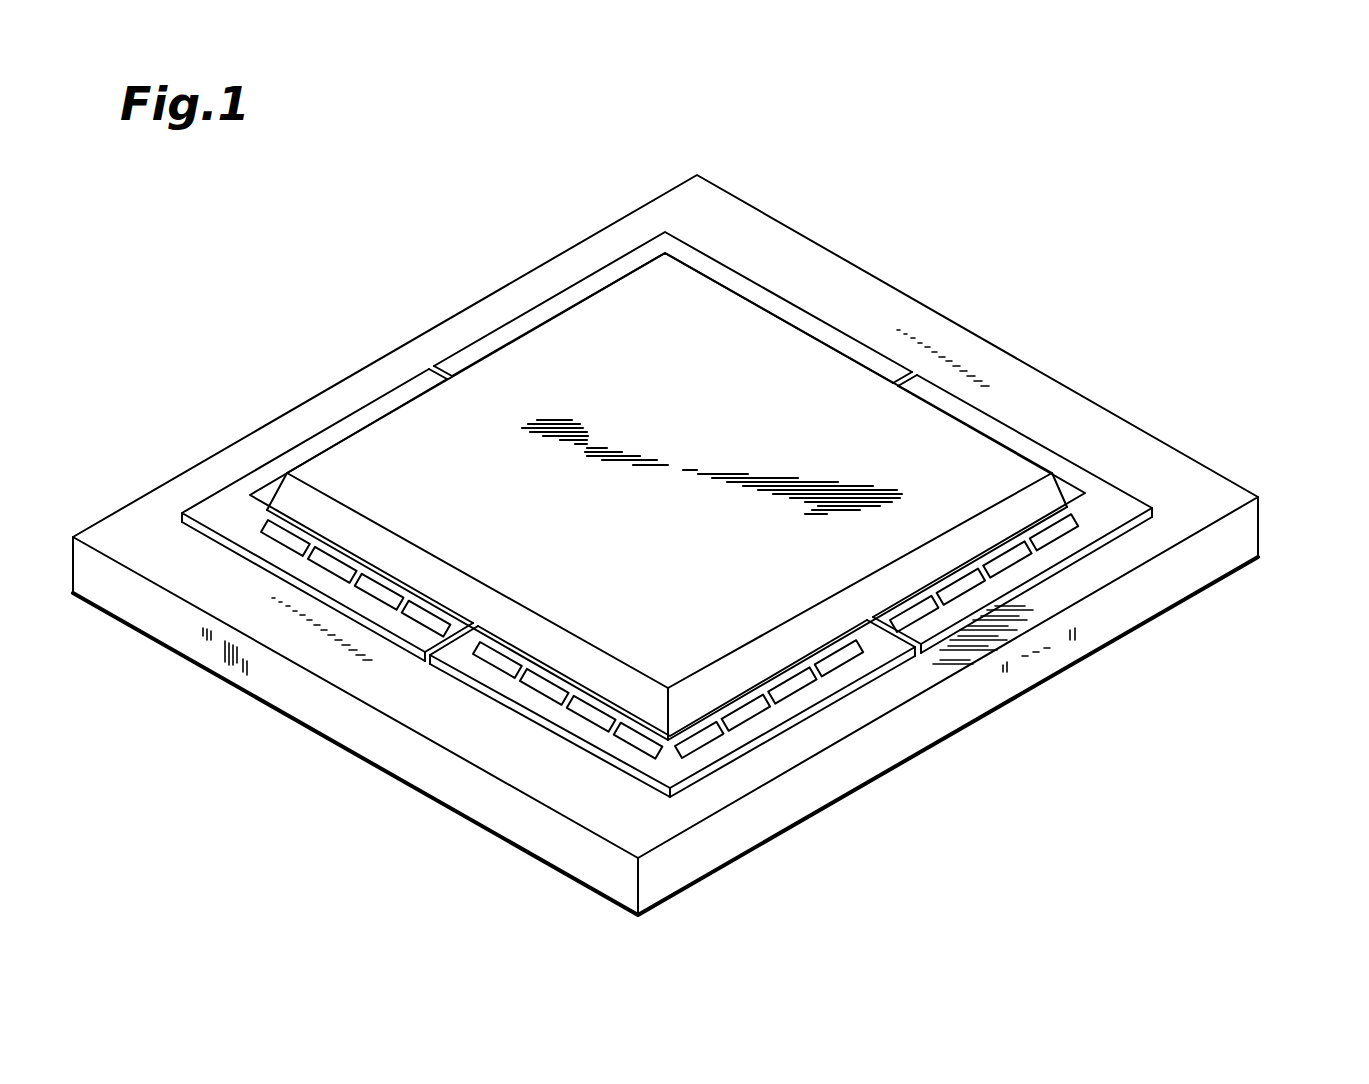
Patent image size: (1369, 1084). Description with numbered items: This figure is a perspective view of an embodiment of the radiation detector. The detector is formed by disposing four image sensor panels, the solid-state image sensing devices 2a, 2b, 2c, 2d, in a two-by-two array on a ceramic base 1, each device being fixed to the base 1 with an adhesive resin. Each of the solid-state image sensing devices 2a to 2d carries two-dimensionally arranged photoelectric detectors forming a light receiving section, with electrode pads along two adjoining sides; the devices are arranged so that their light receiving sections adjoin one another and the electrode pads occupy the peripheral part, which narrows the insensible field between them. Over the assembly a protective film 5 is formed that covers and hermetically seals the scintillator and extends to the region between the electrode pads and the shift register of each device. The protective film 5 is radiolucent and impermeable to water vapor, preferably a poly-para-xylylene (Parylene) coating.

The ceramic base 1 is at (1193, 510).
The protective film 5 is at (785, 365).
The solid-state image sensing device 2a is at (677, 767).
The solid-state image sensing device 2b is at (212, 513).
The solid-state image sensing device 2c is at (1108, 510).
The solid-state image sensing device 2d is at (622, 268).